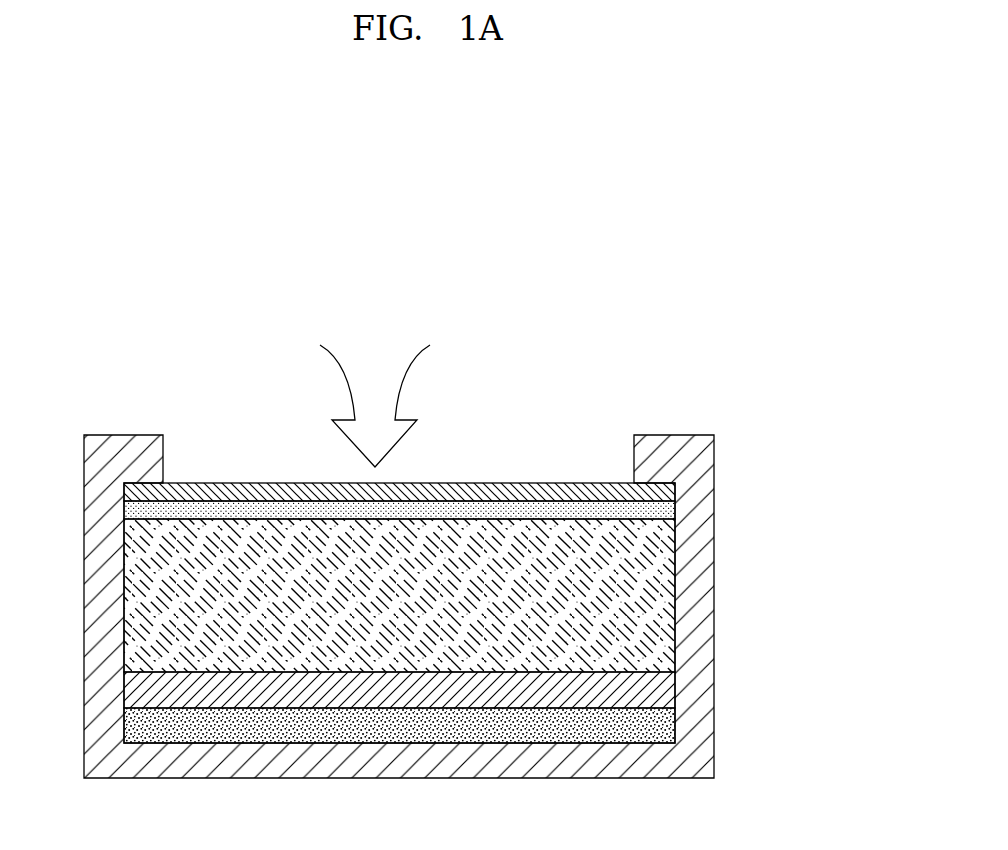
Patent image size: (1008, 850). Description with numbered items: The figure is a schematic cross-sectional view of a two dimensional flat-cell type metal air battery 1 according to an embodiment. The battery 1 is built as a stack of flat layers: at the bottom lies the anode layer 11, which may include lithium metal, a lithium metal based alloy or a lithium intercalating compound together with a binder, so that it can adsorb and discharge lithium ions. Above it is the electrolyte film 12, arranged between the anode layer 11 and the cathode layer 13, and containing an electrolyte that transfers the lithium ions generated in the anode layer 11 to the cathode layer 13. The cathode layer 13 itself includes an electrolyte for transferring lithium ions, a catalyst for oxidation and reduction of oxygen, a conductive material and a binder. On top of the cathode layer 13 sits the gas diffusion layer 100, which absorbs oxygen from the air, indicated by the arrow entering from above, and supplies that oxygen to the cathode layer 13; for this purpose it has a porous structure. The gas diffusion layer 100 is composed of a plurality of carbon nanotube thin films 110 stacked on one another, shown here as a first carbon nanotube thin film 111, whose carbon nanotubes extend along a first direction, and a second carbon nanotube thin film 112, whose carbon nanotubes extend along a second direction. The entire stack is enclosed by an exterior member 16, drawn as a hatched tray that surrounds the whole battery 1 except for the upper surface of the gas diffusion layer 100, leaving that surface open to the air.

The two dimensional flat-cell type metal air battery 1 is at (637, 418).
The gas diffusion layer 100 is at (238, 470).
The carbon nanotube thin films 110 is at (483, 499).
The first carbon nanotube thin film 111 is at (660, 491).
The second carbon nanotube thin film 112 is at (662, 510).
The cathode layer 13 is at (650, 548).
The electrolyte film 12 is at (655, 692).
The anode layer 11 is at (662, 725).
The exterior member 16 is at (413, 763).